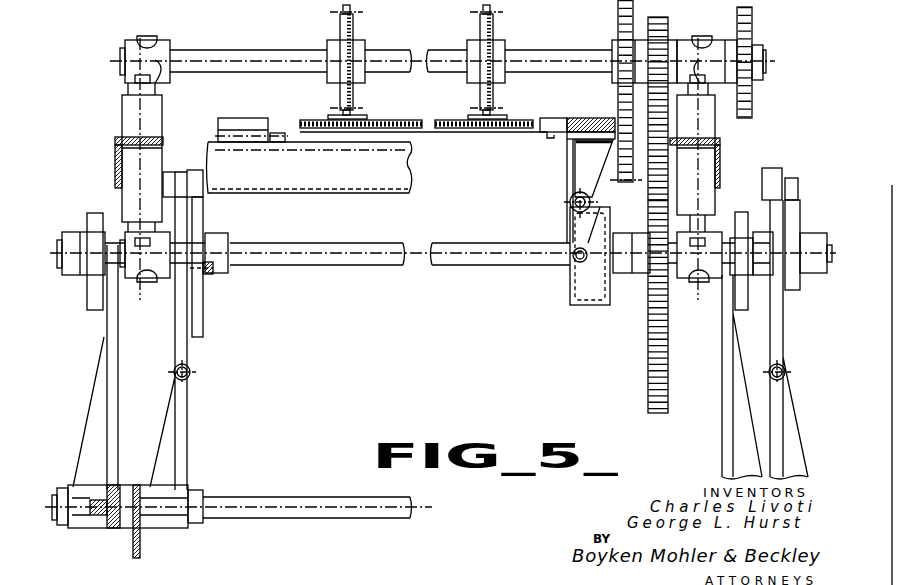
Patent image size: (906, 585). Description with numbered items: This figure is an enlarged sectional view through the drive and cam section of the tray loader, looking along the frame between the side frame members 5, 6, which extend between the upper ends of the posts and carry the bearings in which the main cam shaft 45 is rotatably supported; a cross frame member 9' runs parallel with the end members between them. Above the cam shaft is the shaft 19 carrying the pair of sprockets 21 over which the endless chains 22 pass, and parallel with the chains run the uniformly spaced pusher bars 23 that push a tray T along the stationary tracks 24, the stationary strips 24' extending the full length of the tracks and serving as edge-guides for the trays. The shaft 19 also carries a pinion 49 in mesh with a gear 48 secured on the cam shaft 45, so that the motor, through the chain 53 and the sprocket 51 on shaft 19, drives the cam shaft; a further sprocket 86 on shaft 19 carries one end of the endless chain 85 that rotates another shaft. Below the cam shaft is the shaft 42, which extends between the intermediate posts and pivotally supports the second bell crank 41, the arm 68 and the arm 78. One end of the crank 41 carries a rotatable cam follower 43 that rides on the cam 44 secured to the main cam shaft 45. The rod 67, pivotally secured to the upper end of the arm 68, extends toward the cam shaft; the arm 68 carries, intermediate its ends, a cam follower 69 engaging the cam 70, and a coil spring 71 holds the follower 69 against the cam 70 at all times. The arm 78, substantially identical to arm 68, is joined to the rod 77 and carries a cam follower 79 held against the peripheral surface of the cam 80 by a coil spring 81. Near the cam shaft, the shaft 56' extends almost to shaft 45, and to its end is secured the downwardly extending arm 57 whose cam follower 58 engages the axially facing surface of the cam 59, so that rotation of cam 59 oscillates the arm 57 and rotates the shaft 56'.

The side frame member 5 is at (115, 148).
The side frame member 6 is at (719, 157).
The cross frame member 9' is at (309, 180).
The shaft 19 is at (203, 70).
The sprockets 21 is at (354, 32).
The endless chains 22 is at (351, 12).
The pusher bars 23 is at (455, 130).
The tracks 24 is at (384, 125).
The stationary strips 24' is at (416, 113).
The tray T is at (300, 120).
The second bell crank 41 is at (108, 383).
The shaft 42 is at (249, 488).
The cam follower 43 is at (88, 240).
The cam 44 is at (88, 294).
The main cam shaft 45 is at (325, 266).
The gear 48 is at (656, 351).
The pinion 49 is at (668, 25).
The sprocket 51 is at (613, 42).
The chain 53 is at (618, 6).
The shaft 56' is at (563, 196).
The arm 57 is at (570, 223).
The cam follower 58 is at (570, 266).
The cam 59 is at (572, 301).
The rod 67 is at (170, 170).
The arm 68 is at (187, 421).
The cam follower 69 is at (214, 278).
The cam 70 is at (203, 318).
The coil spring 71 is at (192, 374).
The rod 77 is at (784, 170).
The arm 78 is at (784, 328).
The cam follower 79 is at (815, 275).
The cam 80 is at (797, 209).
The coil spring 81 is at (786, 368).
The endless chain 85 is at (753, 21).
The sprocket 86 is at (764, 42).